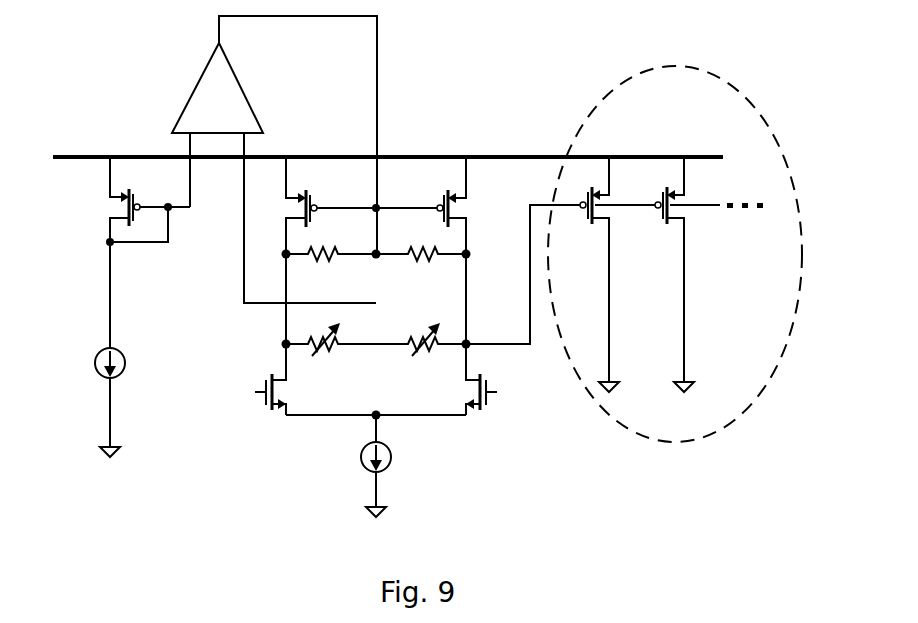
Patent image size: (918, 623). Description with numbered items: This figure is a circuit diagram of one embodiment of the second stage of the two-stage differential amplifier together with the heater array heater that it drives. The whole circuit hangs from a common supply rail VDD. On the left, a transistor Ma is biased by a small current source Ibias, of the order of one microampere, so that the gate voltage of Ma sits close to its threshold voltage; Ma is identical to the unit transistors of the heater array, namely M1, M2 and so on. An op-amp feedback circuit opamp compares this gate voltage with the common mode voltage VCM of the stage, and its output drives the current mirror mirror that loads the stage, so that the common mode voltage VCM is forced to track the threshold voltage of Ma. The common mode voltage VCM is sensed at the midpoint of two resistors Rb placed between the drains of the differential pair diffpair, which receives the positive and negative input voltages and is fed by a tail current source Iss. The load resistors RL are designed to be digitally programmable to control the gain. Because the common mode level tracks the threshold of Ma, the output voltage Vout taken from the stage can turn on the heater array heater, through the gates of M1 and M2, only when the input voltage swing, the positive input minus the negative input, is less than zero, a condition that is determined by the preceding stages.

The supply voltage rail VDD is at (411, 158).
The op-amp feedback circuit opamp is at (274, 159).
The transistor Ma is at (131, 201).
The bias current source Ibias is at (97, 349).
The PMOS current mirror is at (376, 205).
The bias resistor Rb is at (376, 268).
The load resistor RL is at (376, 317).
The common mode voltage VCM is at (373, 333).
The differential input pair diffpair is at (374, 382).
The tail current source Iss is at (364, 466).
The output voltage Vout is at (523, 263).
The heater array heater is at (675, 254).
The unit transistor M1 is at (617, 274).
The unit transistor M2 is at (709, 274).